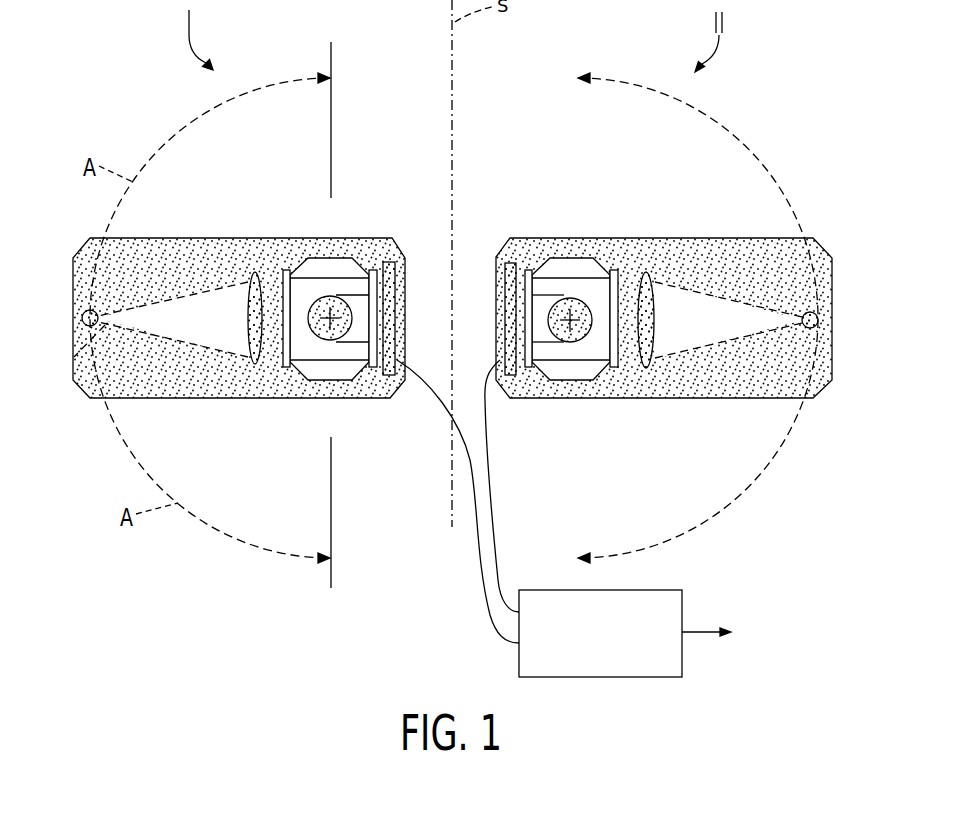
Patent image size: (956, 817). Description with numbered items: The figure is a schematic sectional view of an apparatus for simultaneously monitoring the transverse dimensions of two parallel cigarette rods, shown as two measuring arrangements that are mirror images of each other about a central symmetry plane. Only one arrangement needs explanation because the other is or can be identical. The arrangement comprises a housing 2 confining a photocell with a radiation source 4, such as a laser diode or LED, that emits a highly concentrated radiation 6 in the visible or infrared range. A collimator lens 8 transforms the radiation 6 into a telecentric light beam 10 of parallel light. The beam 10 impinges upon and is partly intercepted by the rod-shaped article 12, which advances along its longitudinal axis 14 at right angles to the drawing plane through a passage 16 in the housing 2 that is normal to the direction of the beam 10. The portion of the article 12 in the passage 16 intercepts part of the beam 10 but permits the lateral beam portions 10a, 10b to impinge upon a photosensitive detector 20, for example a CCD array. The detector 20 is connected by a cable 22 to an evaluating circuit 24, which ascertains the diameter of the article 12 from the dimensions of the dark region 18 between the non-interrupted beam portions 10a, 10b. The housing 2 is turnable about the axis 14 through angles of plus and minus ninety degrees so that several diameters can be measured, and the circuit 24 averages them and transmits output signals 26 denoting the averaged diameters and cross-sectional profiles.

The housing 2 is at (218, 248).
The radiation source 4 is at (84, 314).
The radiation 6 is at (72, 367).
The collimator lens 8 is at (255, 366).
The telecentric light beam 10 is at (287, 368).
The lateral beam portion 10a is at (343, 288).
The lateral beam portion 10b is at (360, 350).
The rod-shaped article 12 is at (322, 342).
The longitudinal axis 14 is at (350, 345).
The through passage 16 is at (318, 266).
The dark region 18 is at (375, 275).
The photosensitive detector 20 is at (390, 284).
The cable 22 is at (473, 497).
The evaluating circuit 24 is at (611, 645).
The output signals 26 is at (696, 631).